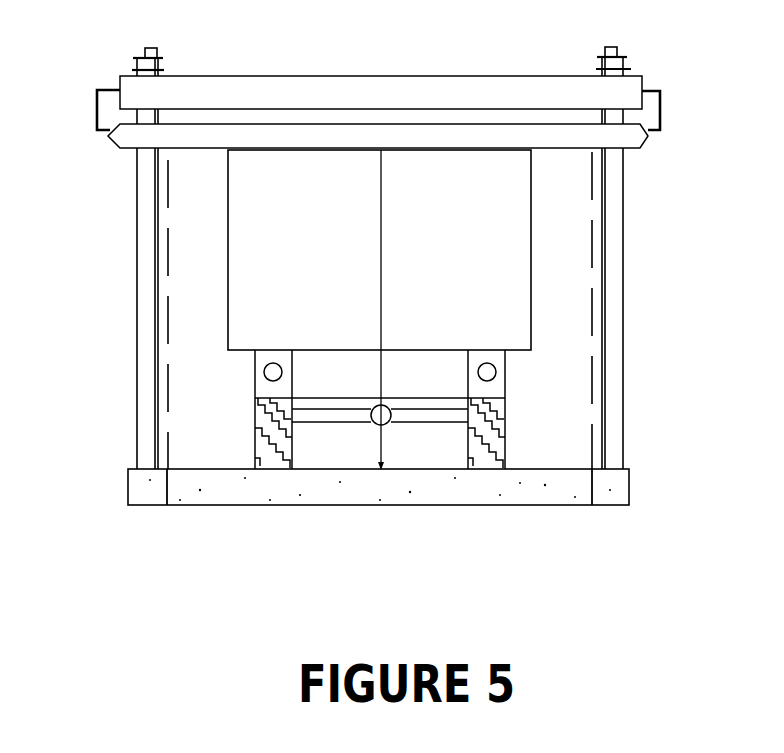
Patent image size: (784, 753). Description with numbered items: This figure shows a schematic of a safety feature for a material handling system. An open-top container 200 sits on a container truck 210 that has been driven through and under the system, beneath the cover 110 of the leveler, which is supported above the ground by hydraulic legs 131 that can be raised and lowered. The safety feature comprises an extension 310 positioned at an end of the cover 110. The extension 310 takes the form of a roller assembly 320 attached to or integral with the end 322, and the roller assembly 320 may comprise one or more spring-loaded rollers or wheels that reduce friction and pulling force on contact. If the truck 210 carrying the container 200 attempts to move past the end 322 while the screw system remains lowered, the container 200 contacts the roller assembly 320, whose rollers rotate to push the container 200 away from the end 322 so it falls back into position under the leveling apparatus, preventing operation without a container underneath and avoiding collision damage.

The cover 110 is at (278, 85).
The legs 131 is at (140, 273).
The open-top container 200 is at (447, 289).
The container truck 210 is at (352, 387).
The extension 310 is at (72, 101).
The roller assembly 320 is at (122, 145).
The end 322 is at (648, 90).